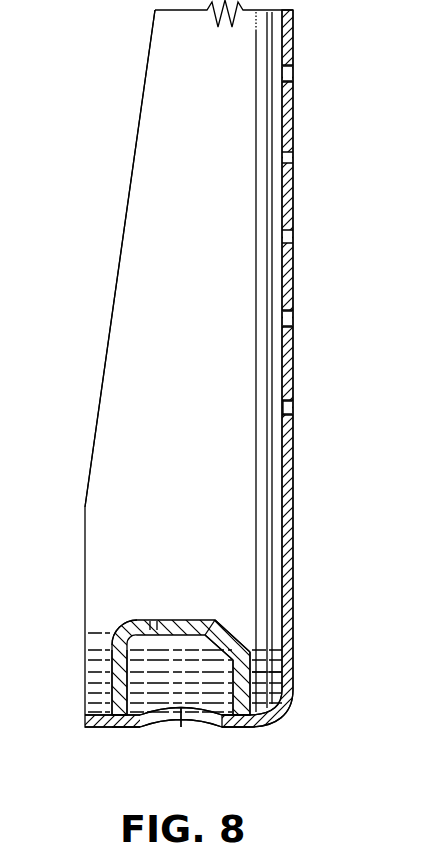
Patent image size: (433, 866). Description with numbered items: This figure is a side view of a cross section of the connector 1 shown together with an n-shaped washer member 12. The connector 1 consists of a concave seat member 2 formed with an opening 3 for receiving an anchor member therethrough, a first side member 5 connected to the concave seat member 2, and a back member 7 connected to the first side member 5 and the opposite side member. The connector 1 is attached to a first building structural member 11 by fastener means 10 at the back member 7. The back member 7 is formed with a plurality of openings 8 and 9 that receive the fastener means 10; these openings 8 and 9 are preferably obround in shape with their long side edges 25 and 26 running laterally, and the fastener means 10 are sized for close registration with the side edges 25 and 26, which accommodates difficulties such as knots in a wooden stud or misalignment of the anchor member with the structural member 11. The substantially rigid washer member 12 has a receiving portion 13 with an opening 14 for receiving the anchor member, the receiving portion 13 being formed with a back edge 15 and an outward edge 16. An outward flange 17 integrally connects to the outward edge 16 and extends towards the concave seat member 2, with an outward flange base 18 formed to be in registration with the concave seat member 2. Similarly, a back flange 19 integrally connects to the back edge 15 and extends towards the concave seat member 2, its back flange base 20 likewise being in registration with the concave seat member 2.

The connector 1 is at (128, 154).
The concave seat member 2 is at (95, 722).
The opening 3 is at (188, 728).
The first side member 5 is at (163, 327).
The back member 7 is at (294, 472).
The opening 8 is at (284, 408).
The opening 9 is at (285, 76).
The fastener means 10 is at (155, 550).
The first building structural member 11 is at (72, 637).
The washer member 12 is at (133, 606).
The receiving portion 13 is at (215, 624).
The opening 14 is at (205, 622).
The back edge 15 is at (245, 640).
The outward edge 16 is at (122, 630).
The outward flange 17 is at (110, 656).
The outward flange base 18 is at (125, 724).
The back flange 19 is at (268, 678).
The back flange base 20 is at (235, 722).
The long side edge 25 is at (290, 73).
The long side edge 26 is at (293, 86).